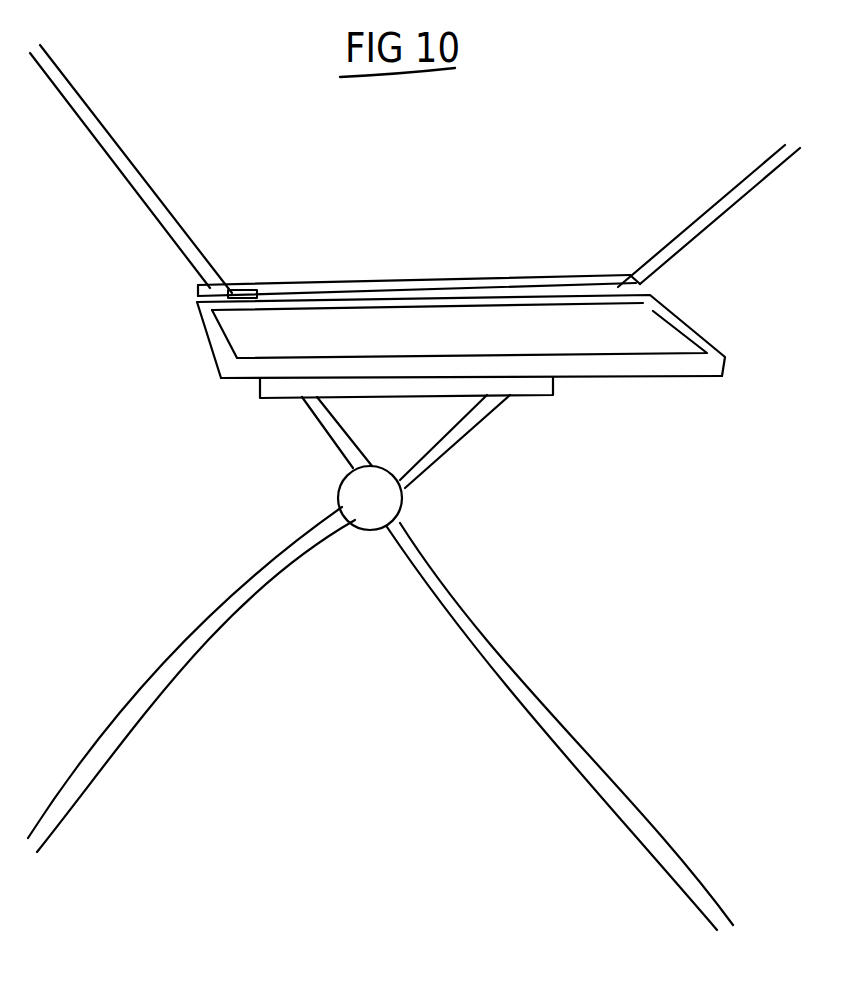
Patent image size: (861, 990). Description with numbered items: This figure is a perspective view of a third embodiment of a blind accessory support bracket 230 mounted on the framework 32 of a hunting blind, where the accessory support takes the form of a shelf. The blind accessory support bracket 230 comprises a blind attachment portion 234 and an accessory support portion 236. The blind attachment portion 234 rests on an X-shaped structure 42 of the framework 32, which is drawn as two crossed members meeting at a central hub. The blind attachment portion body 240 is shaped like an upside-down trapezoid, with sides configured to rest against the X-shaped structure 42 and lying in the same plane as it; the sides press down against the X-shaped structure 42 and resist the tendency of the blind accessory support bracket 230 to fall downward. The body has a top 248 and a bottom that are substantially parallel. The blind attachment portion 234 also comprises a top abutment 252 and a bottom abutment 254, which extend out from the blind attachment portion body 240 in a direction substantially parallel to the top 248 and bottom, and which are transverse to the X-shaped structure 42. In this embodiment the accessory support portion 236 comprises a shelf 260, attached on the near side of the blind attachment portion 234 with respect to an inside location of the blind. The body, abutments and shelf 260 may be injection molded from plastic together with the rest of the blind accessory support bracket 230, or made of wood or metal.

The blind accessory support bracket 230 is at (578, 238).
The blind attachment portion 234 is at (345, 292).
The accessory support portion 236 is at (670, 378).
The blind attachment portion body 240 is at (289, 292).
The top 248 is at (407, 292).
The top abutment 252 is at (457, 263).
The bottom abutment 254 is at (543, 380).
The shelf 260 is at (688, 322).
The X-shaped structure 42 is at (462, 430).
The framework 32 is at (405, 505).